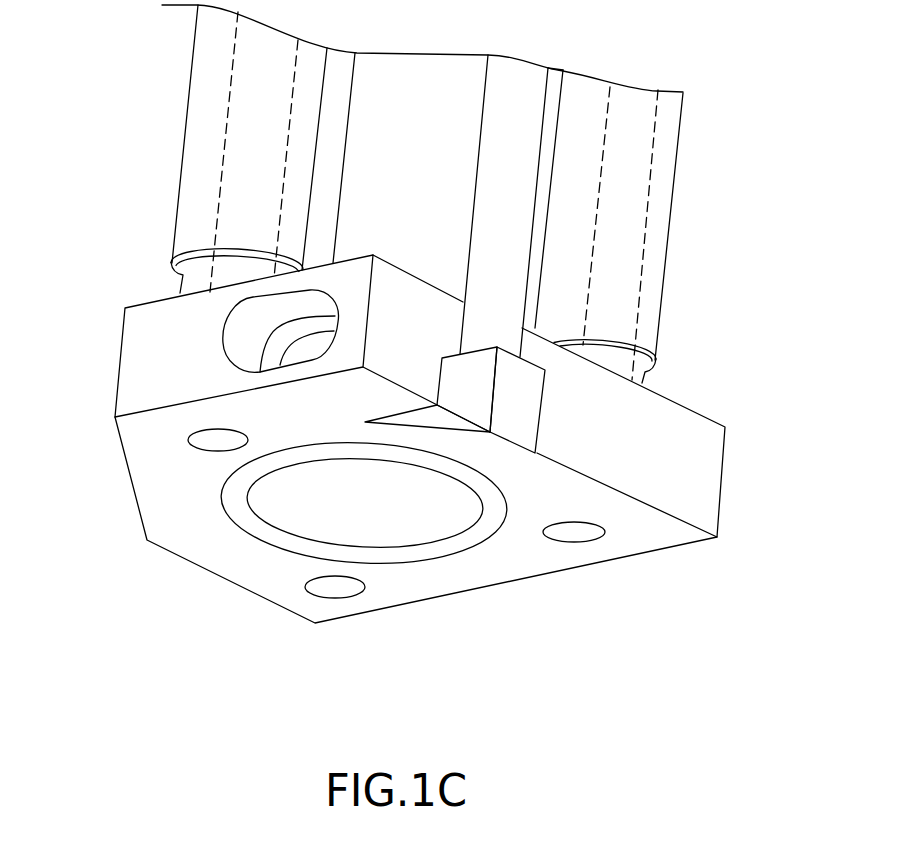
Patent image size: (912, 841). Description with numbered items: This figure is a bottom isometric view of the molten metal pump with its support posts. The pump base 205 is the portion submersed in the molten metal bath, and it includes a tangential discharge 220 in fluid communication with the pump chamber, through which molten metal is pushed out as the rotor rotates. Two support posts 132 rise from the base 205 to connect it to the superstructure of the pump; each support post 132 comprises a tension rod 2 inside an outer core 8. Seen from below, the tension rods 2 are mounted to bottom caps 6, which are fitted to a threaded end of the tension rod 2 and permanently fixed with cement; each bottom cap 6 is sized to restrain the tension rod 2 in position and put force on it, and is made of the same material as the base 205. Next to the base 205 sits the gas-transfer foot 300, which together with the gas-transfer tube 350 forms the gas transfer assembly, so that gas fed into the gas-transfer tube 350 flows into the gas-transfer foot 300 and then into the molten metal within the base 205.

The tension rod 2 is at (245, 117).
The outer core 8 is at (195, 152).
The support post 132 is at (178, 193).
The gas-transfer tube 350 is at (537, 193).
The pump base 205 is at (140, 515).
The gas-transfer foot 300 is at (533, 407).
The tangential discharge 220 is at (323, 322).
The bottom cap 6 is at (197, 437).